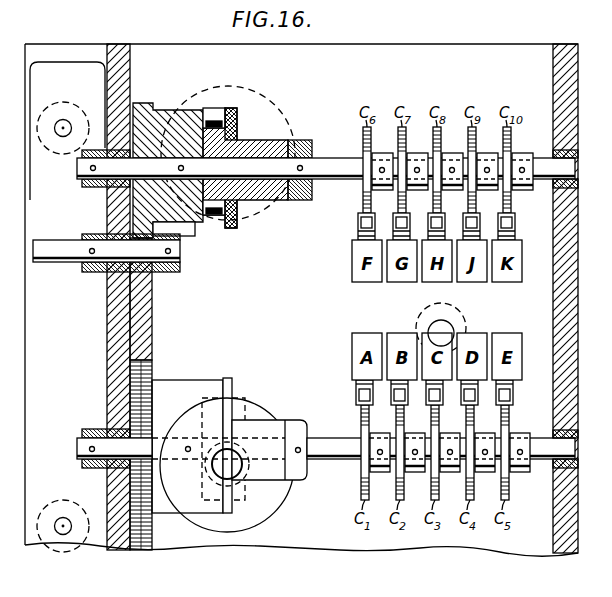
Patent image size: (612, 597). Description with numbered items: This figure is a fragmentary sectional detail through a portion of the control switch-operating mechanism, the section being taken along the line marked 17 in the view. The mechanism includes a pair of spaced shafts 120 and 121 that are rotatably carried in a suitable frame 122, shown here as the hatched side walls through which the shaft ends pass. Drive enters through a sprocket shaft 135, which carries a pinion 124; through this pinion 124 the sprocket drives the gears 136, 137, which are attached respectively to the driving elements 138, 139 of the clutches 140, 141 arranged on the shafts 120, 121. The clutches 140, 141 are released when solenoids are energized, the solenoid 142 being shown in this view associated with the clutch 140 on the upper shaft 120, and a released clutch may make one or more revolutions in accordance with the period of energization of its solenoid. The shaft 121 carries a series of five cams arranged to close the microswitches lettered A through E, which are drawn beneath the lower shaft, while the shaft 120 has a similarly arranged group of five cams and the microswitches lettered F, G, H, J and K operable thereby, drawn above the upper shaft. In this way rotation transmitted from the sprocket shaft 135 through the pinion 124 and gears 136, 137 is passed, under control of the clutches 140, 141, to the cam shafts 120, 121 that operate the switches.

The section line 17- 17 is at (243, 125).
The shaft 120 is at (322, 180).
The shaft 121 is at (322, 448).
The frame 122 is at (562, 58).
The pinion 124 is at (152, 272).
The sprocket shaft 135 is at (54, 253).
The gear 136 is at (136, 106).
The gear 137 is at (141, 546).
The driving element 138 is at (205, 224).
The driving element 139 is at (173, 390).
The clutch 140 is at (232, 230).
The clutch 141 is at (228, 380).
The solenoid 142 is at (284, 110).